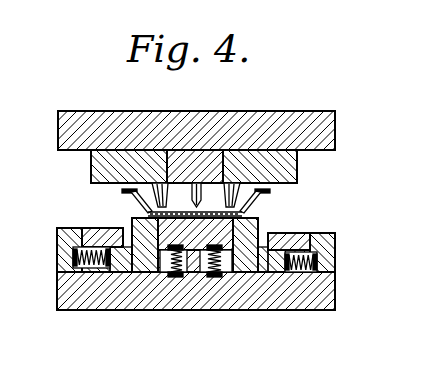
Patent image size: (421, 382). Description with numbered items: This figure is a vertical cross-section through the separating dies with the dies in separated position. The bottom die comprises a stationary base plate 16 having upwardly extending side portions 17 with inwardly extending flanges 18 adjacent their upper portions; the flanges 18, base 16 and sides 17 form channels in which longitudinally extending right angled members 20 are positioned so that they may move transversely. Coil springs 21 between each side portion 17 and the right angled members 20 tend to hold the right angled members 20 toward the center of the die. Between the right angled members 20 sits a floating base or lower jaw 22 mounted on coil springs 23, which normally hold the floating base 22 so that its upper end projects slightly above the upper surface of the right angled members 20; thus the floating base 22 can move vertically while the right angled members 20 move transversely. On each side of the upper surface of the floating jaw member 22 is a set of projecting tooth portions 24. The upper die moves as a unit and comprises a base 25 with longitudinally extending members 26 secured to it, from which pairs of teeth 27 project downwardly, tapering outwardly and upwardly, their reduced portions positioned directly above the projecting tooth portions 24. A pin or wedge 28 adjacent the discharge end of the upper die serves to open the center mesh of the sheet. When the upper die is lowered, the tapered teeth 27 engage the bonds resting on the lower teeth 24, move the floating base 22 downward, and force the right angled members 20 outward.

The base plate 16 is at (335, 292).
The side portions 17 is at (57, 250).
The flanges 18 is at (92, 229).
The right angled members 20 is at (137, 218).
The coil springs 21 is at (73, 263).
The floating base 22 is at (191, 253).
The coil springs 23 is at (172, 277).
The projecting tooth portions 24 is at (270, 193).
The base 25 is at (200, 112).
The longitudinally extending members 26 is at (91, 165).
The teeth 27 is at (124, 191).
The pin or wedge 28 is at (193, 184).